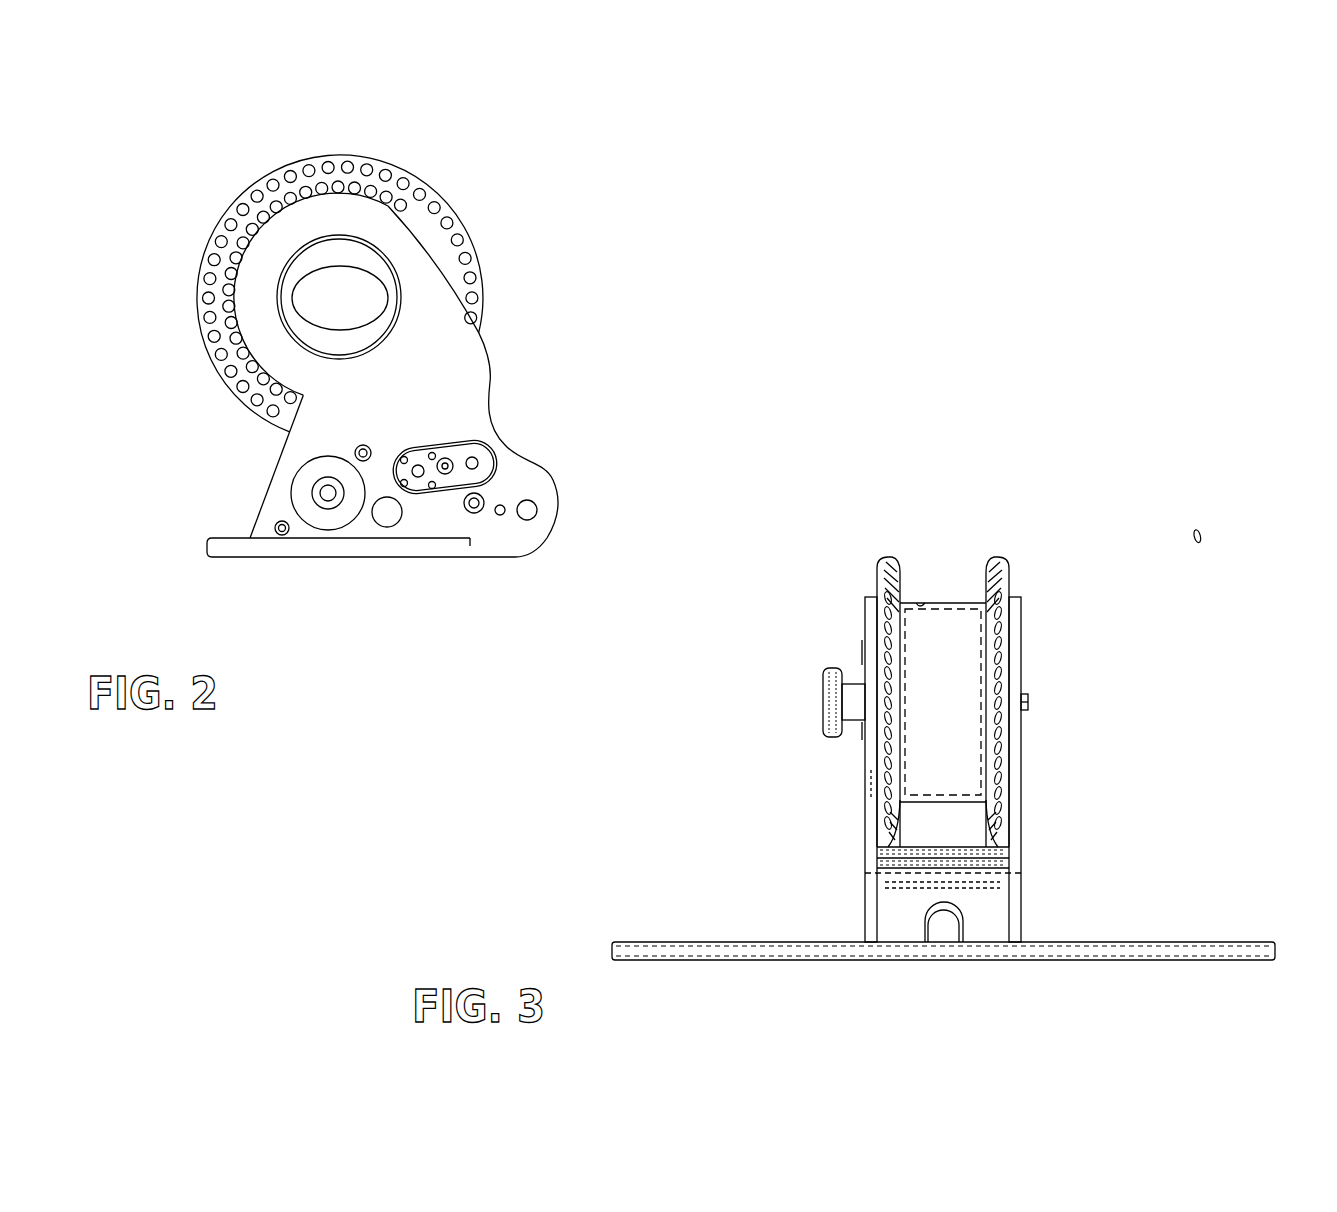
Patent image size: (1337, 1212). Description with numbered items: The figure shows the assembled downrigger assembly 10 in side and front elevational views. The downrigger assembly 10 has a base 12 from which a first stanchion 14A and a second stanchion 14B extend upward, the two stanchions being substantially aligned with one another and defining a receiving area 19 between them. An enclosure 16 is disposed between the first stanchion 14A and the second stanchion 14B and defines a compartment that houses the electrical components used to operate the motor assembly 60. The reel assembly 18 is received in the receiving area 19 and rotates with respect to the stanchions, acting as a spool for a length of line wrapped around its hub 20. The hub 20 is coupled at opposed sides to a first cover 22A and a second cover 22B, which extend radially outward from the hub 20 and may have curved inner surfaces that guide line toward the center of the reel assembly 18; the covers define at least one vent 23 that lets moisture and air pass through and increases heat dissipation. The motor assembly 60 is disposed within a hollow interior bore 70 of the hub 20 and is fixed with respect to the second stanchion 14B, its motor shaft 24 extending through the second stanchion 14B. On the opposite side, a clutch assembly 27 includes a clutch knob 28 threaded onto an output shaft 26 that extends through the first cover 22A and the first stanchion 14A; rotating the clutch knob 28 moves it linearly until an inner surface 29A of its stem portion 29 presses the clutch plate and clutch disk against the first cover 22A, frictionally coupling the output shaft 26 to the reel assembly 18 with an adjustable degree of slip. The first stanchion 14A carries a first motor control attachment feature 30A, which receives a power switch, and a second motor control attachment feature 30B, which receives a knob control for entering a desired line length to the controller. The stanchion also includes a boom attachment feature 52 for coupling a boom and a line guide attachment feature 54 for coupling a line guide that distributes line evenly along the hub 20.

In FIG. 2, the downrigger assembly 10 is at (385, 365).
In FIG. 3, the downrigger assembly 10 is at (948, 705).
In FIG. 2, the base 12 is at (210, 538).
In FIG. 3, the base 12 is at (1232, 940).
In FIG. 2, the first stanchion 14A is at (432, 416).
In FIG. 3, the first stanchion 14A is at (868, 830).
In FIG. 3, the second stanchion 14B is at (1022, 820).
In FIG. 3, the enclosure 16 is at (975, 905).
In FIG. 2, the reel assembly 18 is at (359, 268).
In FIG. 3, the reel assembly 18 is at (1015, 669).
In FIG. 3, the receiving area 19 is at (930, 826).
In FIG. 3, the hub 20 is at (946, 602).
In FIG. 2, the first cover 22A is at (427, 183).
In FIG. 3, the first cover 22A is at (892, 560).
In FIG. 3, the second cover 22B is at (1009, 560).
In FIG. 2, the vent 23 is at (228, 215).
In FIG. 3, the motor shaft 24 is at (1028, 700).
In FIG. 3, the output shaft 26 is at (860, 730).
In FIG. 2, the clutch assembly 27 is at (419, 259).
In FIG. 3, the clutch assembly 27 is at (910, 656).
In FIG. 2, the clutch knob 28 is at (382, 282).
In FIG. 3, the clutch knob 28 is at (823, 690).
In FIG. 3, the stem portion 29 is at (848, 703).
In FIG. 3, the inner surface 29A is at (843, 652).
In FIG. 2, the first motor control attachment feature 30A is at (313, 522).
In FIG. 2, the second motor control attachment feature 30B is at (382, 527).
In FIG. 2, the boom attachment feature 52 is at (533, 507).
In FIG. 2, the line guide attachment feature 54 is at (488, 442).
In FIG. 3, the motor assembly 60 is at (860, 783).
In FIG. 3, the hollow interior bore 70 is at (922, 598).